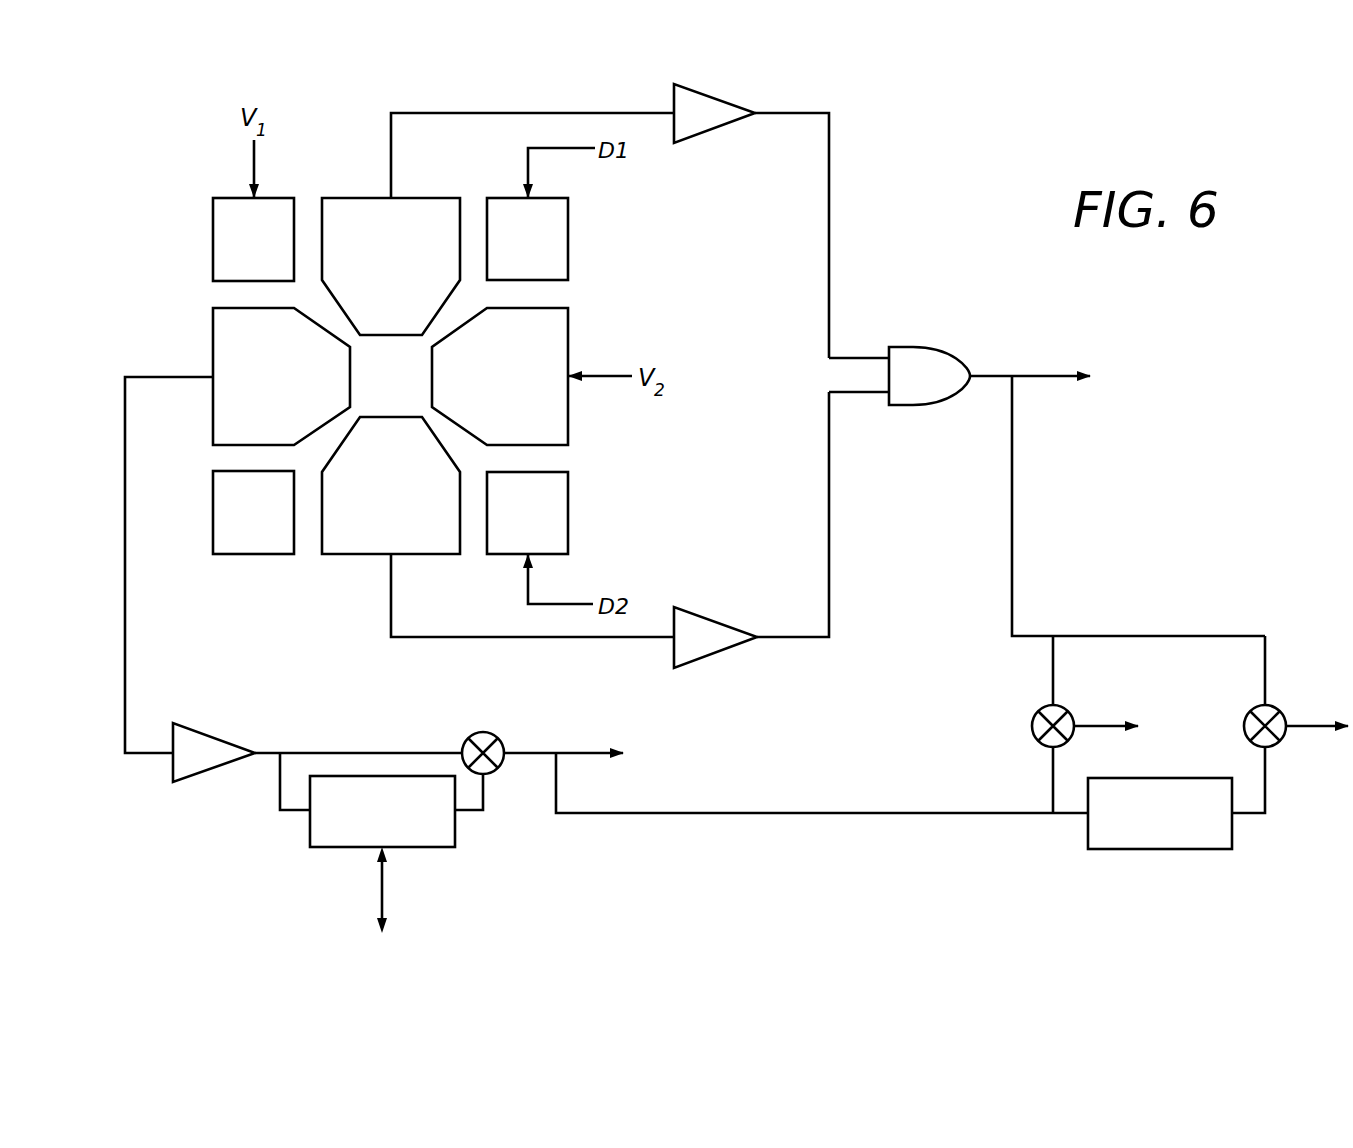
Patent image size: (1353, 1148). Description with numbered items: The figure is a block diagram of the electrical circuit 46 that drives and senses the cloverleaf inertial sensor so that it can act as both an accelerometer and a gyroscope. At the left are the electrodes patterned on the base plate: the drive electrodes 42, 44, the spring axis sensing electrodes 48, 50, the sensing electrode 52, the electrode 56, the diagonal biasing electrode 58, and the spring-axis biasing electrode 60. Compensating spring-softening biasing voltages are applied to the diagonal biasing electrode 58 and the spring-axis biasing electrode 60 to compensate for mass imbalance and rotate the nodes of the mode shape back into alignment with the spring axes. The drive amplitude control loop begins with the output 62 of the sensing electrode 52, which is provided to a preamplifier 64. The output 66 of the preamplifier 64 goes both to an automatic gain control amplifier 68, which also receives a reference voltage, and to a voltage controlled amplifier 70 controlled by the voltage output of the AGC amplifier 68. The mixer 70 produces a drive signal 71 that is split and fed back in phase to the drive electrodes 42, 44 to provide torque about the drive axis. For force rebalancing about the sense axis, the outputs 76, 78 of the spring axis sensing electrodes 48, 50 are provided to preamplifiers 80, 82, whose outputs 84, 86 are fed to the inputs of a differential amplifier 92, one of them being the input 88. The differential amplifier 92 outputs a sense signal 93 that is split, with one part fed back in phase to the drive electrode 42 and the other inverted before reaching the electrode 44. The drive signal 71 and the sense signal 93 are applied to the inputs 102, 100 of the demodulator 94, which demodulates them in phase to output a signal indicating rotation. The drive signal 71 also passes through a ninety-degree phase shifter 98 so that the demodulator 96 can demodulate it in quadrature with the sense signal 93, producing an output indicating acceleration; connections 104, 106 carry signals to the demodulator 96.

The drive electrode 42 is at (567, 228).
The drive electrode 44 is at (563, 504).
The electrical circuit 46 is at (898, 220).
The spring axis sensing electrode 48 is at (417, 206).
The spring axis sensing electrode 50 is at (359, 545).
The sensing electrode 52 is at (222, 339).
The electrode 56 is at (226, 506).
The diagonal biasing electrode 58 is at (222, 226).
The spring-axis biasing electrode 60 is at (567, 328).
The output of the sensing electrode 62 is at (183, 378).
The preamplifier 64 is at (196, 740).
The output of the preamplifier 66 is at (270, 750).
The automatic gain control amplifier 68 is at (320, 848).
The voltage controlled amplifier 70 is at (876, 392).
The drive signal 71 is at (571, 750).
The output of spring axis sensing electrode 76 is at (391, 152).
The output of spring axis sensing electrode 78 is at (395, 590).
The preamplifier 80 is at (692, 128).
The preamplifier 82 is at (705, 625).
The output of the preamplifier 84 is at (784, 113).
The output of the preamplifier 86 is at (782, 636).
The input of the differential amplifier 88 is at (858, 358).
The differential amplifier 92 is at (925, 352).
The sense signal 93 is at (995, 376).
The demodulator 94 is at (1034, 720).
The demodulator 96 is at (1246, 720).
The 90° phase shifter 98 is at (1112, 849).
The input of the demodulator 100 is at (1053, 672).
The input of the demodulator 102 is at (1053, 782).
The signal line 104 is at (1265, 672).
The signal line 106 is at (1265, 782).